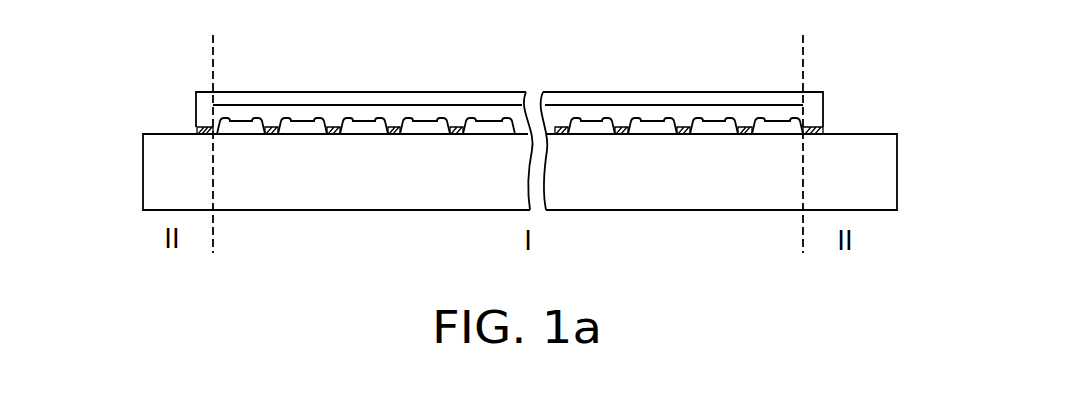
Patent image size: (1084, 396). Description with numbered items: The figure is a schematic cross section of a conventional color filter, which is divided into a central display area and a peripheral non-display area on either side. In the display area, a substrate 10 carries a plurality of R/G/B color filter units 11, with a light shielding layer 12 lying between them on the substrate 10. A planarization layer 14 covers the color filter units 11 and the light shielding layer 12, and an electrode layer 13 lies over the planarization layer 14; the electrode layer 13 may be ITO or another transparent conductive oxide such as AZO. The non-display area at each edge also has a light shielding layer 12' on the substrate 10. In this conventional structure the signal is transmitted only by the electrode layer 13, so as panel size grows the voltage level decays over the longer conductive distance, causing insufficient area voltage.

The substrate 10 is at (334, 195).
The R/G/B color filter units 11 is at (367, 121).
The light shielding layer 12 is at (508, 196).
The light shielding layer 12' is at (512, 109).
The electrode layer 13 is at (396, 92).
The planarization layer 14 is at (774, 117).